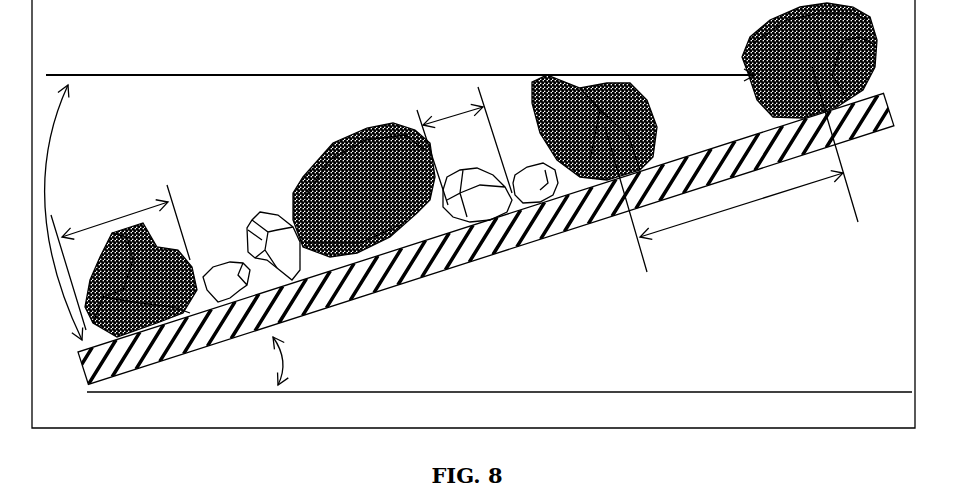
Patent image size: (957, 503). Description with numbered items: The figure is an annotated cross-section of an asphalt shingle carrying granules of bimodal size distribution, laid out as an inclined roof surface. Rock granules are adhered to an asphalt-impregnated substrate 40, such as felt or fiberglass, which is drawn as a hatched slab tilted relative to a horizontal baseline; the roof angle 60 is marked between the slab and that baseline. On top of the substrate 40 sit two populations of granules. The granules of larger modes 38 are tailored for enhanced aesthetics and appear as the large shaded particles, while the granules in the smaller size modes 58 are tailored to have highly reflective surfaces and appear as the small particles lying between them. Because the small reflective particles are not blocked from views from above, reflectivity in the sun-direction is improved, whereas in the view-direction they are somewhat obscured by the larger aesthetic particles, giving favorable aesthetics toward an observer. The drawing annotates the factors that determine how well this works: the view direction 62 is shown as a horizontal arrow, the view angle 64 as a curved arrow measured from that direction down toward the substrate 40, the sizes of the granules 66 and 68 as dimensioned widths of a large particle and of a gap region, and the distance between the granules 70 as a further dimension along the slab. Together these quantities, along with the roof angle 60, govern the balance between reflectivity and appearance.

The granules of larger modes with enhanced aesthetics 38 is at (380, 203).
The asphalt-impregnated substrate 40 is at (512, 258).
The granules in the smaller size modes 58 is at (255, 208).
The roof angle 60 is at (285, 363).
The view direction 62 is at (230, 80).
The view angle 64 is at (68, 103).
The size of the larger granules 66 is at (118, 213).
The size of the smaller granules 68 is at (453, 107).
The distance between the granules 70 is at (740, 207).